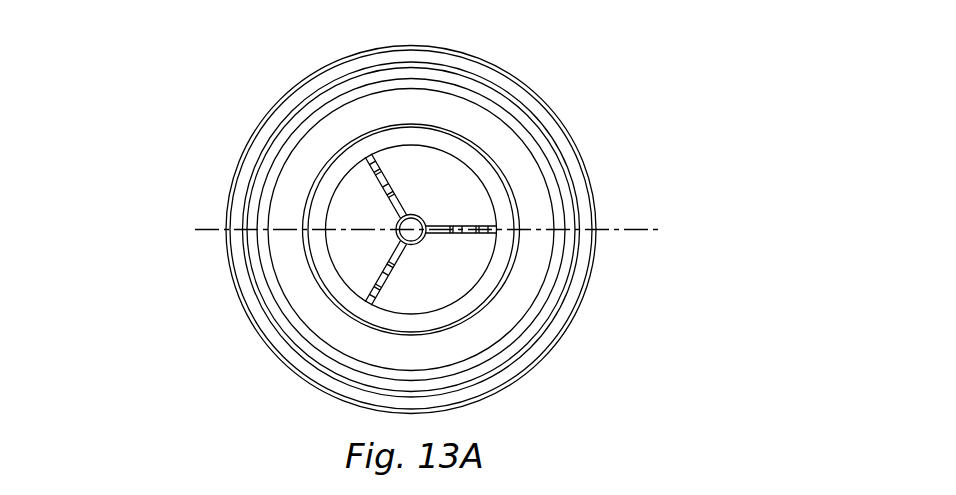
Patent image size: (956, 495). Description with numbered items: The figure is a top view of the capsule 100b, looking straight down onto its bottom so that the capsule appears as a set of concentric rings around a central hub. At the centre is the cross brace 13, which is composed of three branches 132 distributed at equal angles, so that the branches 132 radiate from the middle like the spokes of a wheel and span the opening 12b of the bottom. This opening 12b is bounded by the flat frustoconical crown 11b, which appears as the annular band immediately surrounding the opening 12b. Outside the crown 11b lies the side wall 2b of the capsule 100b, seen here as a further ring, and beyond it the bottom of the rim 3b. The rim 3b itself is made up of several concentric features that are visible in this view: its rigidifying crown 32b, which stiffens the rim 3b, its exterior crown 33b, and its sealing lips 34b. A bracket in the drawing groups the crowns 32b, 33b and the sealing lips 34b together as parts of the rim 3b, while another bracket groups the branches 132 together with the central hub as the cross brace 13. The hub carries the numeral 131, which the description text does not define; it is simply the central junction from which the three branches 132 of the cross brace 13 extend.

The capsule 100b is at (168, 48).
The rim 3b is at (158, 300).
The rigidifying crown 32b is at (270, 350).
The exterior crown 33b is at (272, 325).
The sealing lips 34b is at (280, 295).
The side wall 2b is at (298, 173).
The flat frustoconical crown 11b is at (332, 175).
The opening of the bottom 12b is at (355, 207).
The cross brace 13 is at (648, 155).
The hub 131 is at (470, 223).
The branches 132 is at (422, 216).